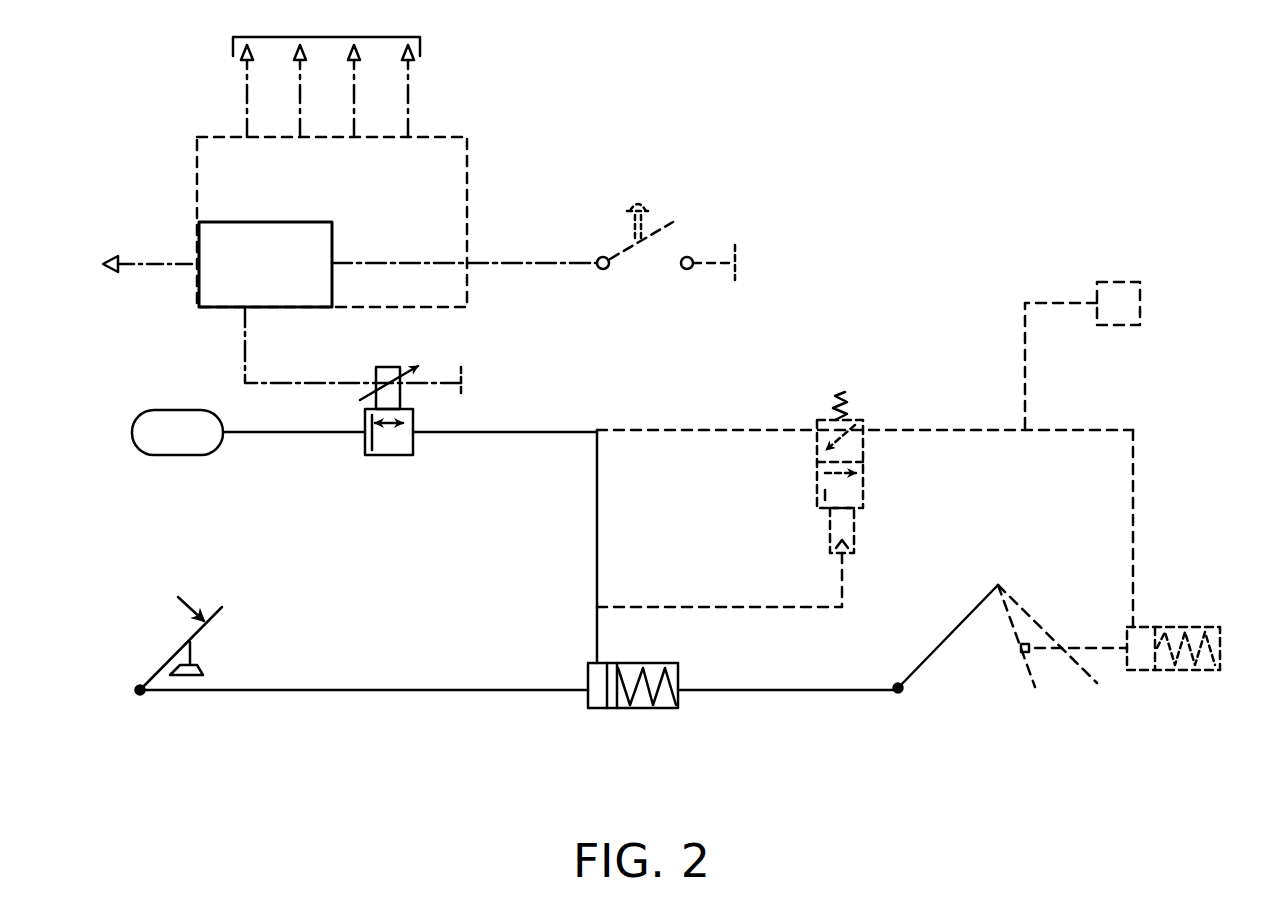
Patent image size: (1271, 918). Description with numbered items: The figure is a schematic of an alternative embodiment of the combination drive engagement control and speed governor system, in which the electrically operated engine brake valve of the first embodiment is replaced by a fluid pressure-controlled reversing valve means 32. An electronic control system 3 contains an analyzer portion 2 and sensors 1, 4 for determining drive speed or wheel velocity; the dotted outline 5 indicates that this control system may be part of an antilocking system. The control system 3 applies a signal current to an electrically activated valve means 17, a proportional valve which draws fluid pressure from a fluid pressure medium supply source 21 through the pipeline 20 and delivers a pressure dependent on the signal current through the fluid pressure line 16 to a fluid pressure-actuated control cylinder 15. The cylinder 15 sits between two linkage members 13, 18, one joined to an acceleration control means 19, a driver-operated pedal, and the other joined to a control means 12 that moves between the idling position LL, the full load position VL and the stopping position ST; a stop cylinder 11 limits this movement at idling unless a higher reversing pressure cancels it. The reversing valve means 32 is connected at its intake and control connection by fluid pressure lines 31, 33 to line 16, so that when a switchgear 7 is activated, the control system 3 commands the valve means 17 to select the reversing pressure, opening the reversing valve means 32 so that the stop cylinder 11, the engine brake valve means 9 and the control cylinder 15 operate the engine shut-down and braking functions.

The sensor 1 is at (113, 256).
The analyzer portion 2 is at (205, 253).
The electronic control system 3 is at (168, 80).
The sensor 4 is at (238, 42).
The dotted outline 5 is at (478, 190).
The switchgear 7 is at (658, 209).
The engine brake valve means 9 is at (1113, 264).
The stop cylinder 11 is at (1178, 622).
The control means 12 is at (937, 648).
The linkage member 13 is at (752, 690).
The fluid pressure-actuated control cylinder 15 is at (611, 720).
The fluid pressure line 16 is at (596, 617).
The electrically activated valve means 17 is at (388, 466).
The linkage member 18 is at (212, 690).
The acceleration control means 19 is at (158, 632).
The pipeline 20 is at (260, 434).
The fluid pressure medium supply source 21 is at (160, 420).
The fluid pressure line 31 is at (722, 430).
The fluid pressure-controlled reversing valve means 32 is at (880, 478).
The fluid pressure line 33 is at (843, 587).